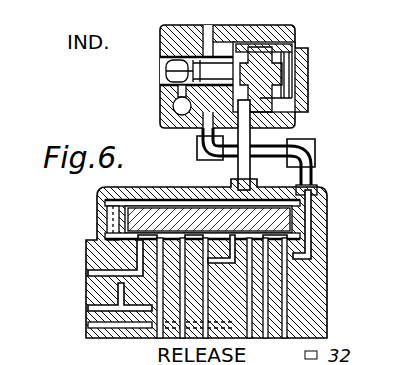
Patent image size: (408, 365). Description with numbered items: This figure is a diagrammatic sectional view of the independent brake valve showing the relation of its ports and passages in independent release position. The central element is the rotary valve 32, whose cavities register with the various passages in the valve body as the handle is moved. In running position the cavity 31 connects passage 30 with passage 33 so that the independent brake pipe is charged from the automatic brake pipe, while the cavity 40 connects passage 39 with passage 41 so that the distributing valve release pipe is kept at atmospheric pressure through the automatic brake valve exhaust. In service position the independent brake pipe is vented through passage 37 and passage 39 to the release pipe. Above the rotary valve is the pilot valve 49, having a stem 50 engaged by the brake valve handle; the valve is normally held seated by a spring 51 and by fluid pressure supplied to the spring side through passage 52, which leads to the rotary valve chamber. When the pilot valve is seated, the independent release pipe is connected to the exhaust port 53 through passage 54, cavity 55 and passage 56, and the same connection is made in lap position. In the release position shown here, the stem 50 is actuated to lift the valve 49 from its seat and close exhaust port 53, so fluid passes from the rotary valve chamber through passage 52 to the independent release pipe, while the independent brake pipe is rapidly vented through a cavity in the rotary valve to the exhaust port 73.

The passage 30 is at (245, 282).
The cavity 31 is at (278, 228).
The rotary valve 32 is at (314, 190).
The passage 33 is at (285, 297).
The passage 37 is at (266, 315).
The passage 39 is at (163, 288).
The cavity 40 is at (147, 228).
The passage 41 is at (98, 272).
The pilot valve 49 is at (247, 44).
The stem 50 is at (172, 72).
The spring 51 is at (282, 62).
The passage 52 is at (247, 190).
The exhaust port 53 is at (176, 107).
The passage 54 is at (183, 305).
The cavity 55 is at (208, 219).
The passage 56 is at (294, 257).
The exhaust port 73 is at (205, 274).